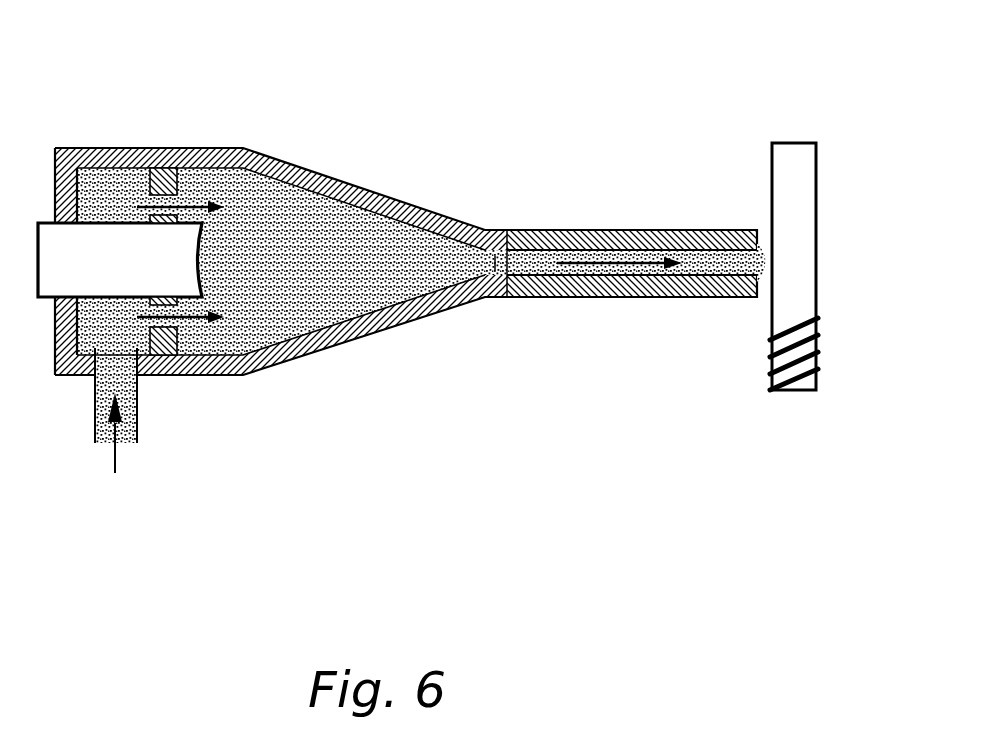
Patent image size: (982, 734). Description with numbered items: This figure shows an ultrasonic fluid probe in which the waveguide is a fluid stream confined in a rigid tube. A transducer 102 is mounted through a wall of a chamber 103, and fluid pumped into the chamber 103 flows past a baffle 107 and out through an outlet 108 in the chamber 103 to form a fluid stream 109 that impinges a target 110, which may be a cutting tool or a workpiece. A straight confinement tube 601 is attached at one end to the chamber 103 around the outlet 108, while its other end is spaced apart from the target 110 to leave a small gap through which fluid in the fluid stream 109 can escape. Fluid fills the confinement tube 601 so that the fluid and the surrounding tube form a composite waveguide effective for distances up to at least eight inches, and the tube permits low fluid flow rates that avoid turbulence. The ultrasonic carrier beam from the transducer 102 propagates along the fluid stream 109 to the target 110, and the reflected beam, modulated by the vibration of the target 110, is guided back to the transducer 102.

The transducer 102 is at (96, 273).
The chamber 103 is at (106, 160).
The baffle 107 is at (167, 182).
The outlet 108 is at (495, 263).
The fluid stream 109 is at (712, 263).
The target 110 is at (795, 228).
The straight confinement tube 601 is at (587, 283).